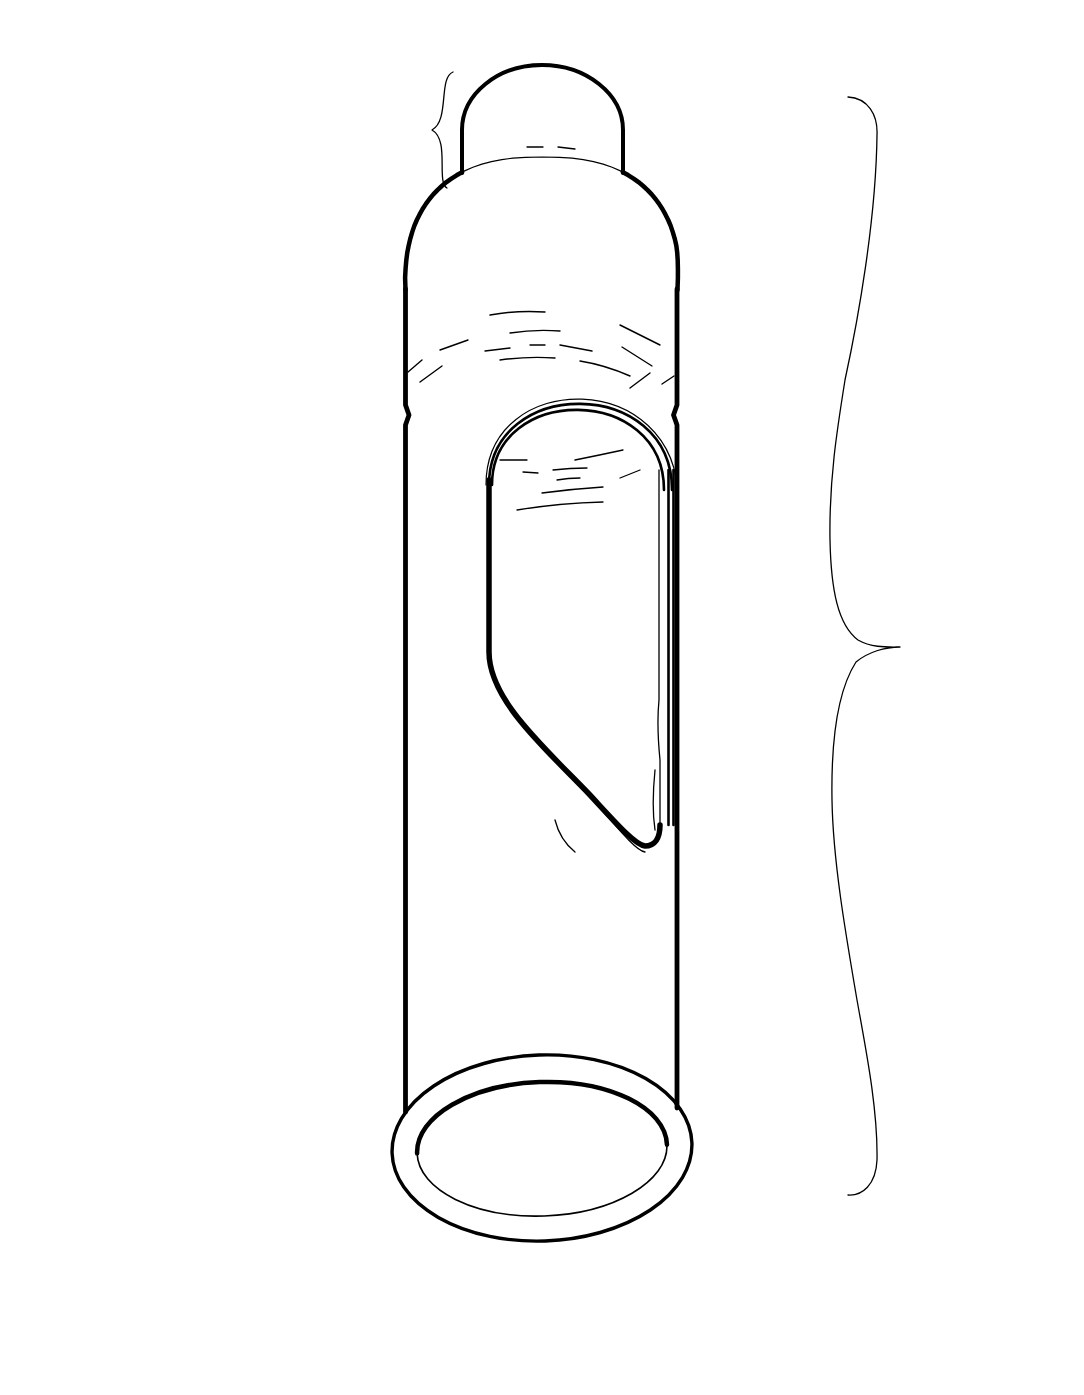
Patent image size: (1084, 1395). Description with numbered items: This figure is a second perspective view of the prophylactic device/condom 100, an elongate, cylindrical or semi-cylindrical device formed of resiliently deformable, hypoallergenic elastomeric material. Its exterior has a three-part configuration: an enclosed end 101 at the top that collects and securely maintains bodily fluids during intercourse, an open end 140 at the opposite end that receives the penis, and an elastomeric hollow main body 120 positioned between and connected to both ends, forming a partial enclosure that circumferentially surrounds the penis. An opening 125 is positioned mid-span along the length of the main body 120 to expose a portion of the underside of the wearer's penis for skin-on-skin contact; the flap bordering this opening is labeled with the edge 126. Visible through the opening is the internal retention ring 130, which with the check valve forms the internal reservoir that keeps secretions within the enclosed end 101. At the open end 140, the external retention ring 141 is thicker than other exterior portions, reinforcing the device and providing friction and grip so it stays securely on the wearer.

The prophylactic device/condom 100 is at (150, 143).
The enclosed end 101 is at (598, 97).
The main body 120 is at (475, 777).
The opening 125 is at (590, 573).
The flap edge 126 is at (578, 778).
The internal retention ring 130 is at (630, 440).
The open end 140 is at (510, 1170).
The external retention ring 141 is at (407, 1146).